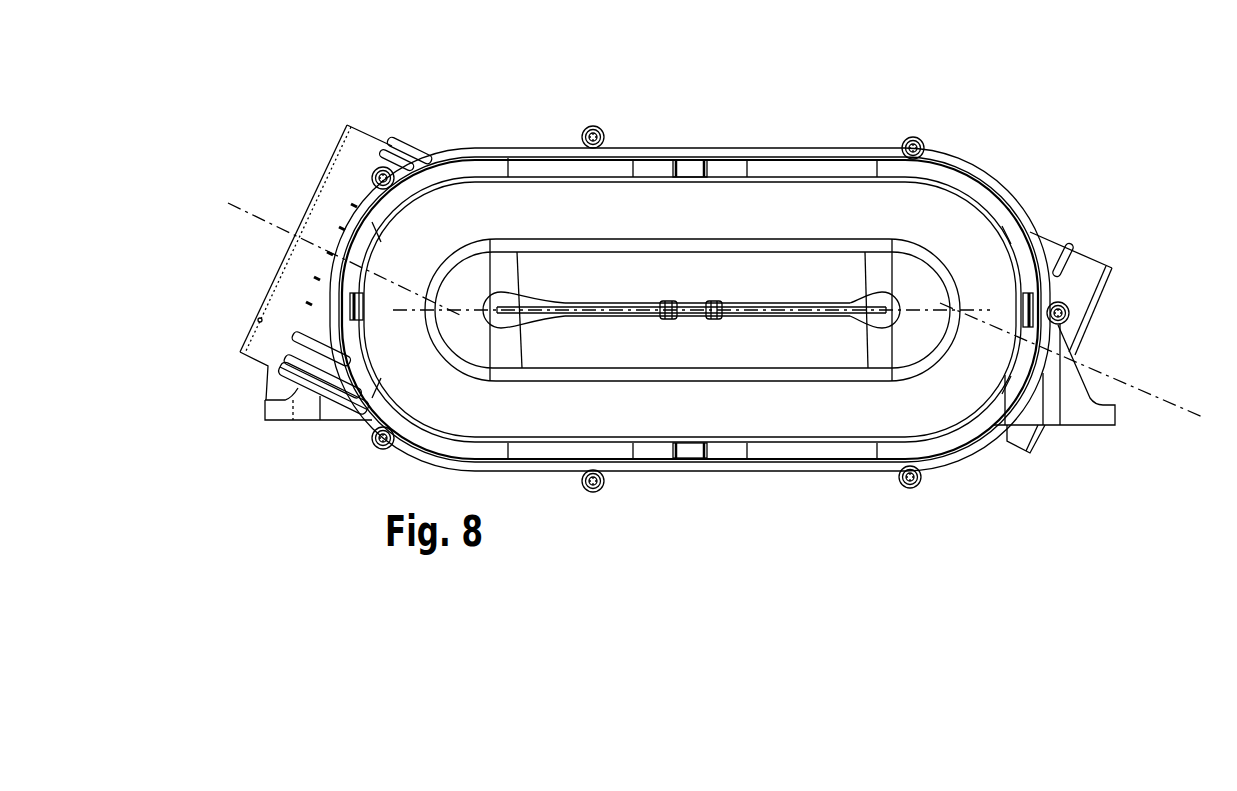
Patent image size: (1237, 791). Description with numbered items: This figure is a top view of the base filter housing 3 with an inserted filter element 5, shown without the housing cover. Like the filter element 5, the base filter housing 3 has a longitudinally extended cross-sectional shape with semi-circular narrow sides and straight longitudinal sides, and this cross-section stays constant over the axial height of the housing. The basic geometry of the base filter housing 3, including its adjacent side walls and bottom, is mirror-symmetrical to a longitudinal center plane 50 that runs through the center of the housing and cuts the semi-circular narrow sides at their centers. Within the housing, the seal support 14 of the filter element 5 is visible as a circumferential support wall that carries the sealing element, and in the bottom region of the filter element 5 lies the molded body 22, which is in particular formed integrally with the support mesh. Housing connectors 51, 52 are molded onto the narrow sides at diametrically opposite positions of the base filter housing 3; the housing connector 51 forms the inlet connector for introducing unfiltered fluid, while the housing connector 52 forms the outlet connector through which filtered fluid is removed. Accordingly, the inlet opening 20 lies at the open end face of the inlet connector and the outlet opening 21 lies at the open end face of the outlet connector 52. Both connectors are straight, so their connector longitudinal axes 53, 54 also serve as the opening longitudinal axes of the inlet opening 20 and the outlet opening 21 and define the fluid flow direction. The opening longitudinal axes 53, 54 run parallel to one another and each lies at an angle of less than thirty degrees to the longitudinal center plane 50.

The base filter housing 3 is at (522, 128).
The filter element 5 is at (672, 157).
The seal support 14 is at (778, 172).
The inlet opening 20 is at (336, 251).
The outlet opening 21 is at (1040, 435).
The molded body 22 is at (532, 300).
The longitudinal center plane 50 is at (914, 318).
The housing connector 51 is at (372, 143).
The housing connector 52 is at (1085, 270).
The connector longitudinal axis 53 is at (258, 220).
The connector longitudinal axis 54 is at (1172, 407).